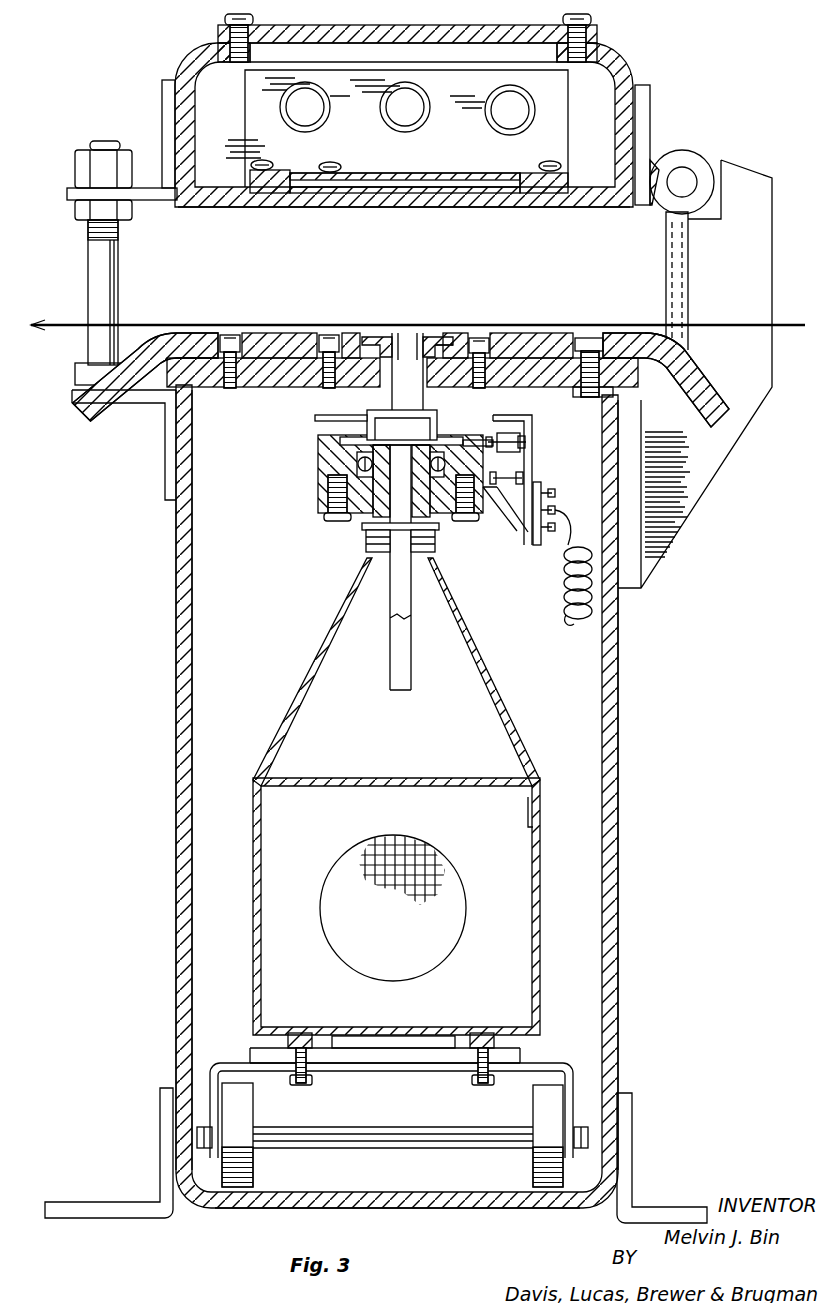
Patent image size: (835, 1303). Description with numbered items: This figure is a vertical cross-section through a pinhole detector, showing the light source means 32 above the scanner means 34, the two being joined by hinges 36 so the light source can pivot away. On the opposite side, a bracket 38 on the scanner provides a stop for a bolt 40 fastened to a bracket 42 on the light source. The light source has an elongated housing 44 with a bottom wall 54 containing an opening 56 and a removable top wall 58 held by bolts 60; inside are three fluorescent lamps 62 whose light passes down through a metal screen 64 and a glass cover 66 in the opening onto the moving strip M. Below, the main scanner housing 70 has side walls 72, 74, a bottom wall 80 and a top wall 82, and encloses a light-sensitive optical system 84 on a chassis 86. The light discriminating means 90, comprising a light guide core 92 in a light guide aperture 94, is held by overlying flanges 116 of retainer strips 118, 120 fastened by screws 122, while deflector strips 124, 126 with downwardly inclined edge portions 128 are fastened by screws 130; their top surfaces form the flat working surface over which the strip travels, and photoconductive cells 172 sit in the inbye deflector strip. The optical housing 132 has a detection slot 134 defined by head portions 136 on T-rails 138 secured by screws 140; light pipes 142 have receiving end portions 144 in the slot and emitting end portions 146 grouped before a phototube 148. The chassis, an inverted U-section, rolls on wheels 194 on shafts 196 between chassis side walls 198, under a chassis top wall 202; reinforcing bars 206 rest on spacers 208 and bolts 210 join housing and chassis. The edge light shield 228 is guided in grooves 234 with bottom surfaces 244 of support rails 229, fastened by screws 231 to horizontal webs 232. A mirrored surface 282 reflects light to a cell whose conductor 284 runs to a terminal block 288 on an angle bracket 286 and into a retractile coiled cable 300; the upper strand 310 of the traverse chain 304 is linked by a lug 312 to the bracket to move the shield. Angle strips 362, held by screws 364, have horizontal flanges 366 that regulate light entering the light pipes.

The light source means 32 is at (425, 125).
The scanner means 34 is at (670, 777).
The hinges 36 is at (693, 160).
The bracket 38 is at (168, 470).
The bolt 40 is at (88, 266).
The bracket 42 is at (160, 124).
The housing 44 is at (174, 64).
The bottom wall 54 is at (246, 206).
The opening 56 is at (312, 196).
The top wall 58 is at (594, 33).
The bolts 60 is at (226, 20).
The fluorescent lamps 62 is at (326, 124).
The metal screen 64 is at (405, 175).
The glass cover 66 is at (425, 197).
The main scanner housing 70 is at (176, 803).
The side wall 72 is at (622, 657).
The side wall 74 is at (180, 635).
The bottom wall 80 is at (273, 1207).
The top wall 82 is at (260, 386).
The light-sensitive optical system 84 is at (313, 658).
The chassis 86 is at (552, 1064).
The light discriminating means 90 is at (445, 340).
The light guide means 92 is at (400, 340).
The light guide aperture 94 is at (416, 338).
The flanges 116 is at (378, 338).
The retainer strip 118 is at (513, 340).
The retainer strip 120 is at (288, 333).
The screws 122 is at (328, 335).
The deflector strip 124 is at (633, 340).
The deflector strip 126 is at (185, 333).
The downwardly inclined edge portions 128 is at (98, 412).
The screws 130 is at (230, 335).
The light-tight housing 132 is at (280, 731).
The detection slot 134 is at (368, 547).
The head portions 136 is at (437, 447).
The T-rails 138 is at (363, 512).
The screws 140 is at (376, 560).
The light pipes 142 is at (411, 645).
The light-receiving end portions 144 is at (404, 446).
The light-emitting end portions 146 is at (430, 865).
The phototube 148 is at (393, 895).
The photoconductive cells 172 is at (585, 340).
The wheels 194 is at (247, 1107).
The shafts 196 is at (388, 1130).
The chassis side walls 198 is at (212, 1108).
The chassis top wall 202 is at (368, 1072).
The transverse reinforcing bars 206 is at (345, 1038).
The spacers 208 is at (270, 1057).
The bolts 210 is at (485, 1082).
The edge light shield 228 is at (365, 420).
The light shield support rails 229 is at (318, 470).
The screws 231 is at (330, 515).
The horizontal webs 232 is at (328, 497).
The guide grooves 234 is at (462, 443).
The bottom surfaces 244 is at (363, 436).
The mirrored reflective surface 282 is at (503, 495).
The conductor 284 is at (513, 523).
The angle bracket 286 is at (525, 420).
The terminal block 288 is at (533, 544).
The retractile coiled cable 300 is at (570, 620).
The traverse chain 304 is at (520, 477).
The upper strand 310 is at (518, 438).
The lug 312 is at (520, 450).
The angle strips 362 is at (387, 416).
The screws 364 is at (358, 462).
The horizontal flanges 366 is at (408, 436).
The strip M is at (139, 325).